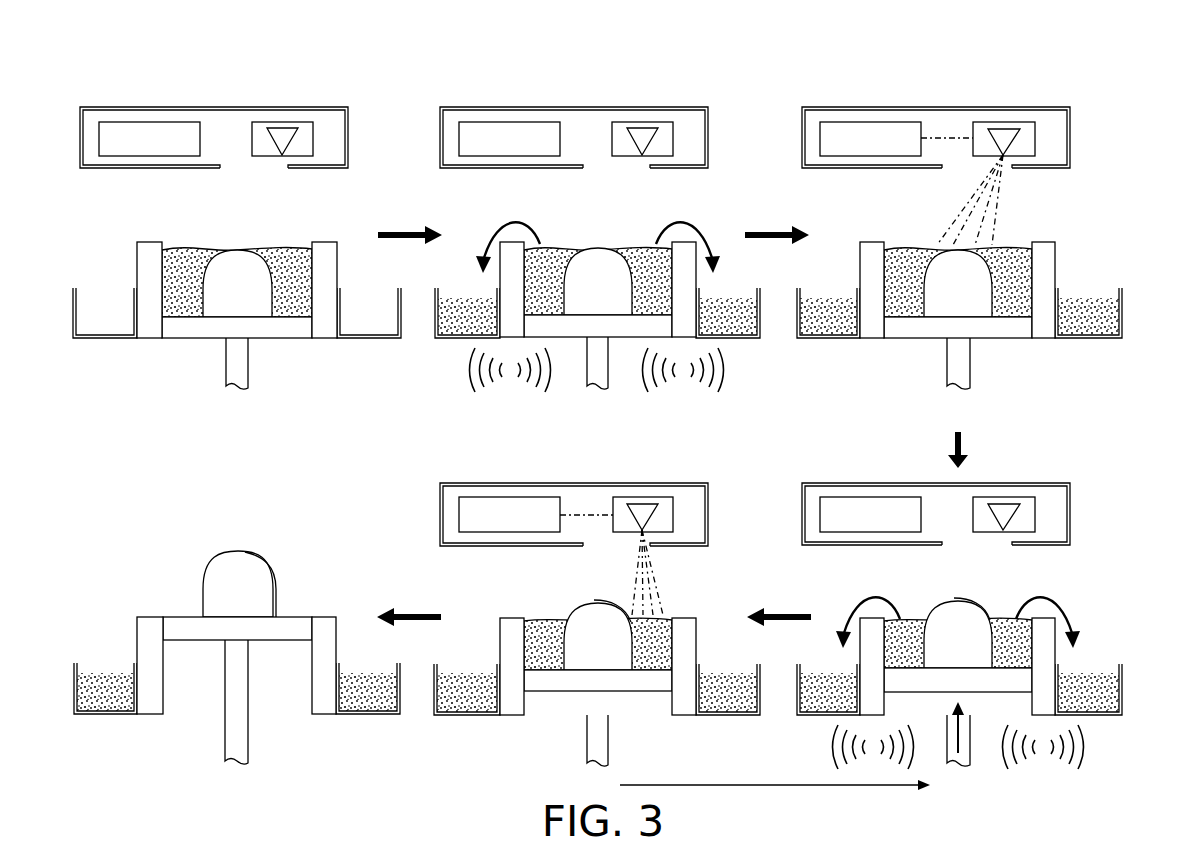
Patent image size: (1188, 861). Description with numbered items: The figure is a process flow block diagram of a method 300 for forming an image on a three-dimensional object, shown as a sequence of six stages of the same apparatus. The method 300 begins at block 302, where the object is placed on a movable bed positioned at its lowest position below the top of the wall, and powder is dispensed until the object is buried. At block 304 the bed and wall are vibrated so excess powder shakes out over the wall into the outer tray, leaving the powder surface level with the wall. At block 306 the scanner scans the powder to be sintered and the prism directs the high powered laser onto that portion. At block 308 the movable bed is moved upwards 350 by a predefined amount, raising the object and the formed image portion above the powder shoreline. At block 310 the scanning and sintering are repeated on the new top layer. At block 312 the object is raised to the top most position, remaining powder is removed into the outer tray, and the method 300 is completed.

The method 300 is at (648, 46).
The block 302 is at (237, 314).
The block 304 is at (600, 318).
The block 306 is at (959, 315).
The block 308 is at (960, 680).
The block 310 is at (597, 674).
The block 312 is at (235, 666).
The upward movement 350 is at (947, 728).